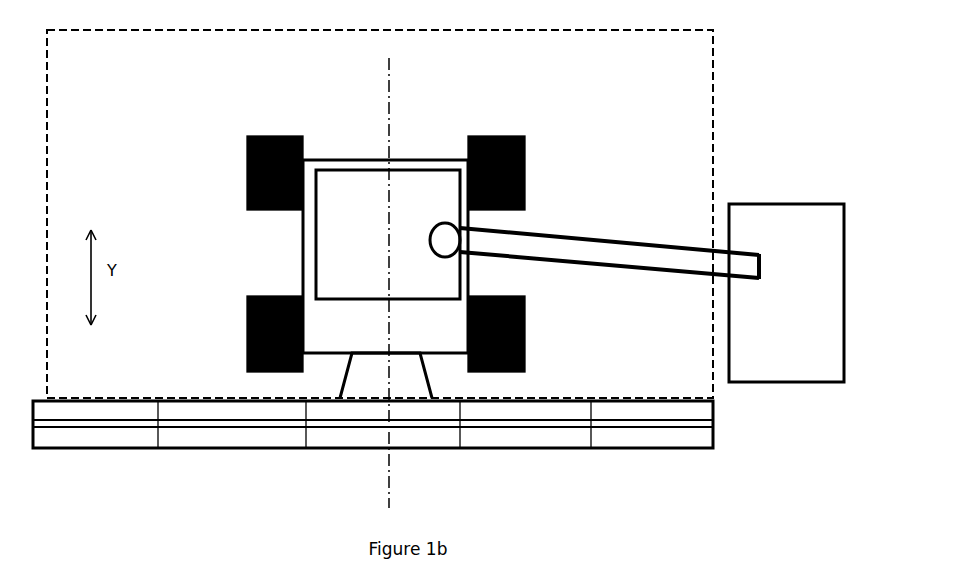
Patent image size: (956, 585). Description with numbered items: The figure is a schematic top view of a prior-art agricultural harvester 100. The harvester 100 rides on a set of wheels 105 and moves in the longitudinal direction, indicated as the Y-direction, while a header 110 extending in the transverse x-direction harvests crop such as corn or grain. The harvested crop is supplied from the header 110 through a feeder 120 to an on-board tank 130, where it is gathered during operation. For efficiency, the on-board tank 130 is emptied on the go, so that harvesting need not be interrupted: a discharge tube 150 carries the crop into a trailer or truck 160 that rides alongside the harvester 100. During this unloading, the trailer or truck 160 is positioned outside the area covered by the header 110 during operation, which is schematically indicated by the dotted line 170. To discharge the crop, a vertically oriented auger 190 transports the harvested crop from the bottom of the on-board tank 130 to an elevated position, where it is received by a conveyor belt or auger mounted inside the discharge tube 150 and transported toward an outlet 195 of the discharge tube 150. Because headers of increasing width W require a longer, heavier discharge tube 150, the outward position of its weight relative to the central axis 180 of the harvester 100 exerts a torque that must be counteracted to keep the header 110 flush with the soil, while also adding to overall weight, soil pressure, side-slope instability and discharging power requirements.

The agricultural harvester 100 is at (186, 148).
The set of wheels 105 is at (525, 173).
The header 110 is at (257, 442).
The feeder 120 is at (408, 387).
The on-board tank 130 is at (345, 262).
The discharge tube 150 is at (652, 260).
The trailer or truck 160 is at (777, 222).
The dotted line 170 is at (711, 62).
The central axis 180 is at (388, 83).
The vertically oriented auger 190 is at (445, 238).
The outlet 195 is at (759, 280).